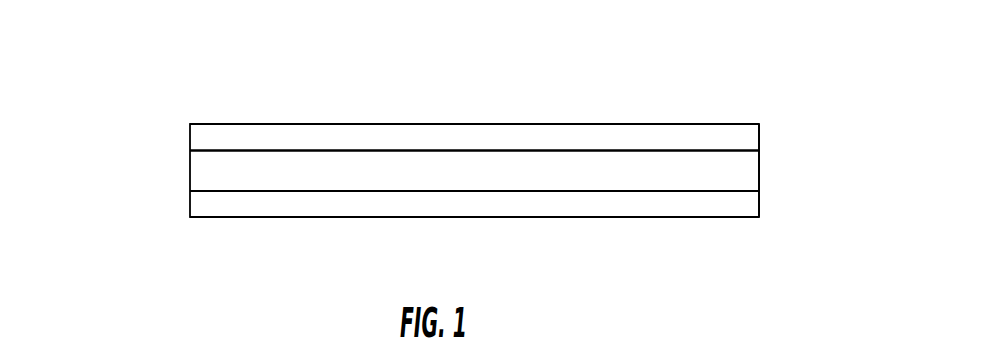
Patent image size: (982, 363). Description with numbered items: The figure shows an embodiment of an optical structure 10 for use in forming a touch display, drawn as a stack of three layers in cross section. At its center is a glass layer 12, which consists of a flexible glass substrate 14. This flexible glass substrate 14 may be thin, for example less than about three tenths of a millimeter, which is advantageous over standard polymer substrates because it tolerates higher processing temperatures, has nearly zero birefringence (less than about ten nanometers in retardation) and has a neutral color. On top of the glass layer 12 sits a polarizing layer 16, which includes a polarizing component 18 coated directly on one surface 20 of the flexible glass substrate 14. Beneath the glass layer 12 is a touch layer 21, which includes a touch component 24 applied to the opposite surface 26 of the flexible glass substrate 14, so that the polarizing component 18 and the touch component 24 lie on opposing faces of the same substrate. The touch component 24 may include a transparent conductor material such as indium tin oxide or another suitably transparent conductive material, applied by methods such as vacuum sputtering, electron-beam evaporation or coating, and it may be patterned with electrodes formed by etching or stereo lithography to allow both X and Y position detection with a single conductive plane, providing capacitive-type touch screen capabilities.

The optical structure 10 is at (760, 41).
The glass layer 12 is at (172, 174).
The flexible glass substrate 14 is at (748, 169).
The polarizing layer 16 is at (180, 107).
The polarizing component 18 is at (301, 129).
The one surface 20 is at (446, 150).
The touch layer 21 is at (174, 226).
The touch component 24 is at (413, 204).
The opposite surface 26 is at (573, 191).